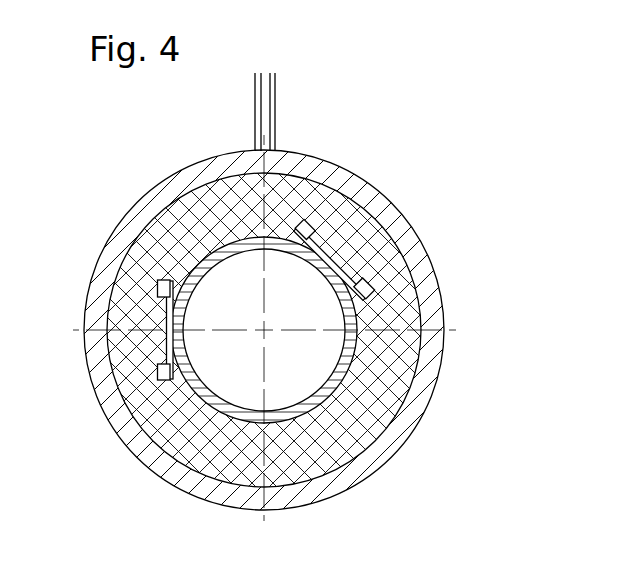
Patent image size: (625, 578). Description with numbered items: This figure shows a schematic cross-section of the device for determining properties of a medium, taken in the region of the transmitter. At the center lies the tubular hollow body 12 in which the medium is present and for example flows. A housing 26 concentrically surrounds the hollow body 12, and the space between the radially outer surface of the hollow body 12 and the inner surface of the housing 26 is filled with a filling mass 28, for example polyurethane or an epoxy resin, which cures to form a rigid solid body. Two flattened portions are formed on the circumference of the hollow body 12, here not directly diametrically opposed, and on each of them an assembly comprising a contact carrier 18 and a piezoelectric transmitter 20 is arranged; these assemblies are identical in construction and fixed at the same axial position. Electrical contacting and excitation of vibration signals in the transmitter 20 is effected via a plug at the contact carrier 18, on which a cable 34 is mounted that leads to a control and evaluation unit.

The tubular hollow body 12 is at (320, 397).
The contact carrier 18 is at (166, 380).
The piezoelectric transmitter 20 is at (168, 343).
The housing 26 is at (186, 167).
The filling mass 28 is at (170, 225).
The cable 34 is at (277, 74).